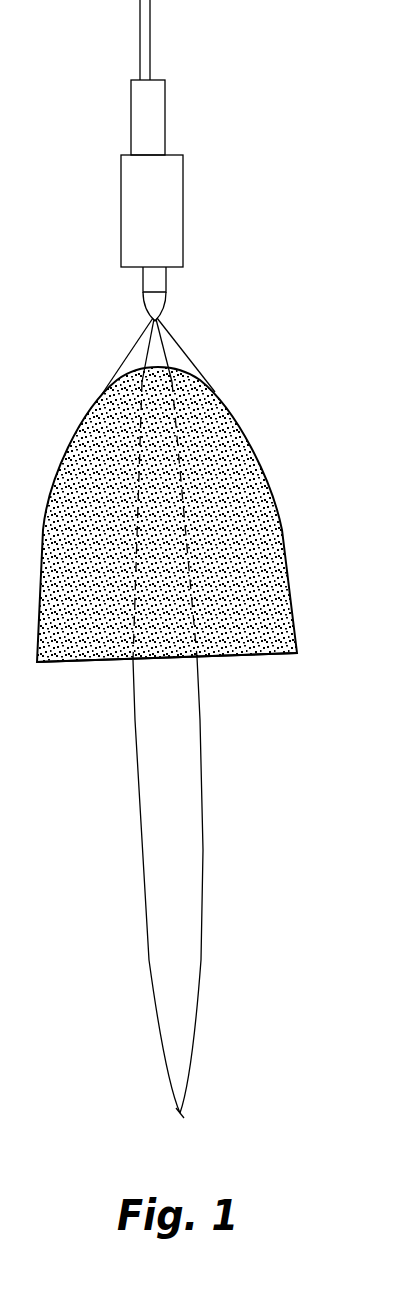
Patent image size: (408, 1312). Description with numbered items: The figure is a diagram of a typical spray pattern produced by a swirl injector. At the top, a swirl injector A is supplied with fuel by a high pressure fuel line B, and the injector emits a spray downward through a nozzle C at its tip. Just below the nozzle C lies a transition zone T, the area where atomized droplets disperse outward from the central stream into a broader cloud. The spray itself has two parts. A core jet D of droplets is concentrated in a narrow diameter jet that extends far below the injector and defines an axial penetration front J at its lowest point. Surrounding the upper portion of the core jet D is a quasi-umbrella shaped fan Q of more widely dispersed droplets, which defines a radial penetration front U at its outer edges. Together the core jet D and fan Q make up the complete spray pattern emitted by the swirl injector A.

The high pressure fuel line B is at (146, 26).
The swirl injector A is at (183, 208).
The nozzle C is at (166, 314).
The transition zone T is at (128, 353).
The quasi-umbrella shaped fan Q is at (253, 463).
The radial penetration front U is at (68, 663).
The core jet D is at (208, 885).
The axial penetration front J is at (180, 1113).